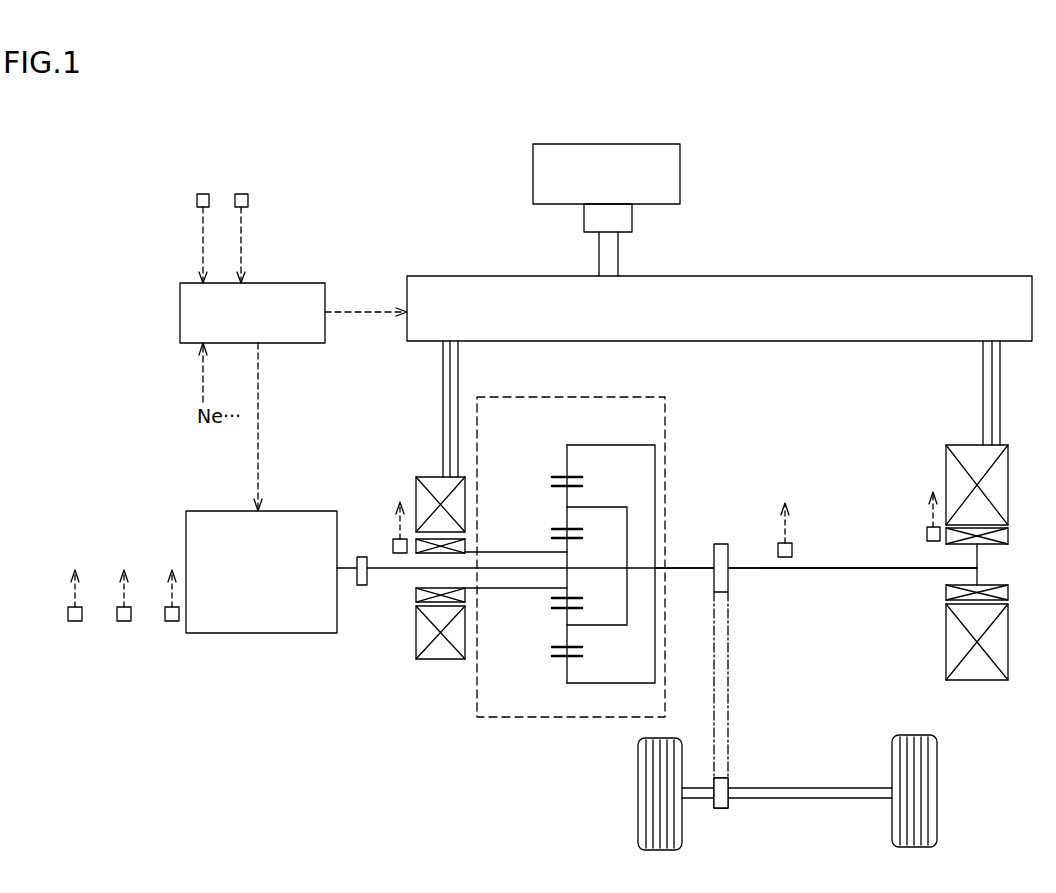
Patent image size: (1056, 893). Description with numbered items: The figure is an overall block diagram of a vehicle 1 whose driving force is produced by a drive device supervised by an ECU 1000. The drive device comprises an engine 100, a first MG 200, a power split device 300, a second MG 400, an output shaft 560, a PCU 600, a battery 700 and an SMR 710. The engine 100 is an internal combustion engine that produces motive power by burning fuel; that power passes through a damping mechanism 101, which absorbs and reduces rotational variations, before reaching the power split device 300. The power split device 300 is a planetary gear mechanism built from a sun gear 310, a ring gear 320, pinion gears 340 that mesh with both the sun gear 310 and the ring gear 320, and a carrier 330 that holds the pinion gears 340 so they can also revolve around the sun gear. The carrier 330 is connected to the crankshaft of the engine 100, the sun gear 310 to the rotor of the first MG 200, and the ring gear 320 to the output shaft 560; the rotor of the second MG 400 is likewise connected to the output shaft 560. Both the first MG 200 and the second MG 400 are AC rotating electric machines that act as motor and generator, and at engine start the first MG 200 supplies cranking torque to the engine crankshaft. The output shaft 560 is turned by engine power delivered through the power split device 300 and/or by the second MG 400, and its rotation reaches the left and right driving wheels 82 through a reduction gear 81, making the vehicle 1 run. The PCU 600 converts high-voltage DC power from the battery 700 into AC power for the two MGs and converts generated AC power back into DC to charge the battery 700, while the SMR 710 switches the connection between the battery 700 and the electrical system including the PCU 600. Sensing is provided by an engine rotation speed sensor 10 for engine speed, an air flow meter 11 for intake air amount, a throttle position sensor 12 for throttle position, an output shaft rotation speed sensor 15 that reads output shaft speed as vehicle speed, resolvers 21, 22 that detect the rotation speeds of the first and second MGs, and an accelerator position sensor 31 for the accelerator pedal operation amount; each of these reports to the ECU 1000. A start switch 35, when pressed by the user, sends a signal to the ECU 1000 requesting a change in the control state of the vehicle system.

The vehicle 1 is at (627, 86).
The engine rotation speed sensor 10 is at (172, 622).
The air flow meter 11 is at (124, 622).
The throttle position sensor 12 is at (75, 622).
The output shaft rotation speed sensor 15 is at (793, 549).
The resolver 21 is at (392, 543).
The resolver 22 is at (926, 538).
The accelerator position sensor 31 is at (203, 193).
The start switch 35 is at (241, 193).
The reduction gear 81 is at (728, 685).
The driving wheels 82 is at (937, 815).
The engine 100 is at (267, 633).
The damping mechanism 101 is at (362, 585).
The first MG 200 is at (427, 477).
The power split device 300 is at (571, 583).
The sun gear 310 is at (573, 540).
The ring gear 320 is at (554, 477).
The carrier 330 is at (618, 507).
The pinion gears 340 is at (555, 490).
The second MG 400 is at (963, 444).
The output shaft 560 is at (848, 569).
The PCU 600 is at (757, 276).
The battery 700 is at (680, 168).
The SMR 710 is at (632, 218).
The ECU 1000 is at (300, 283).